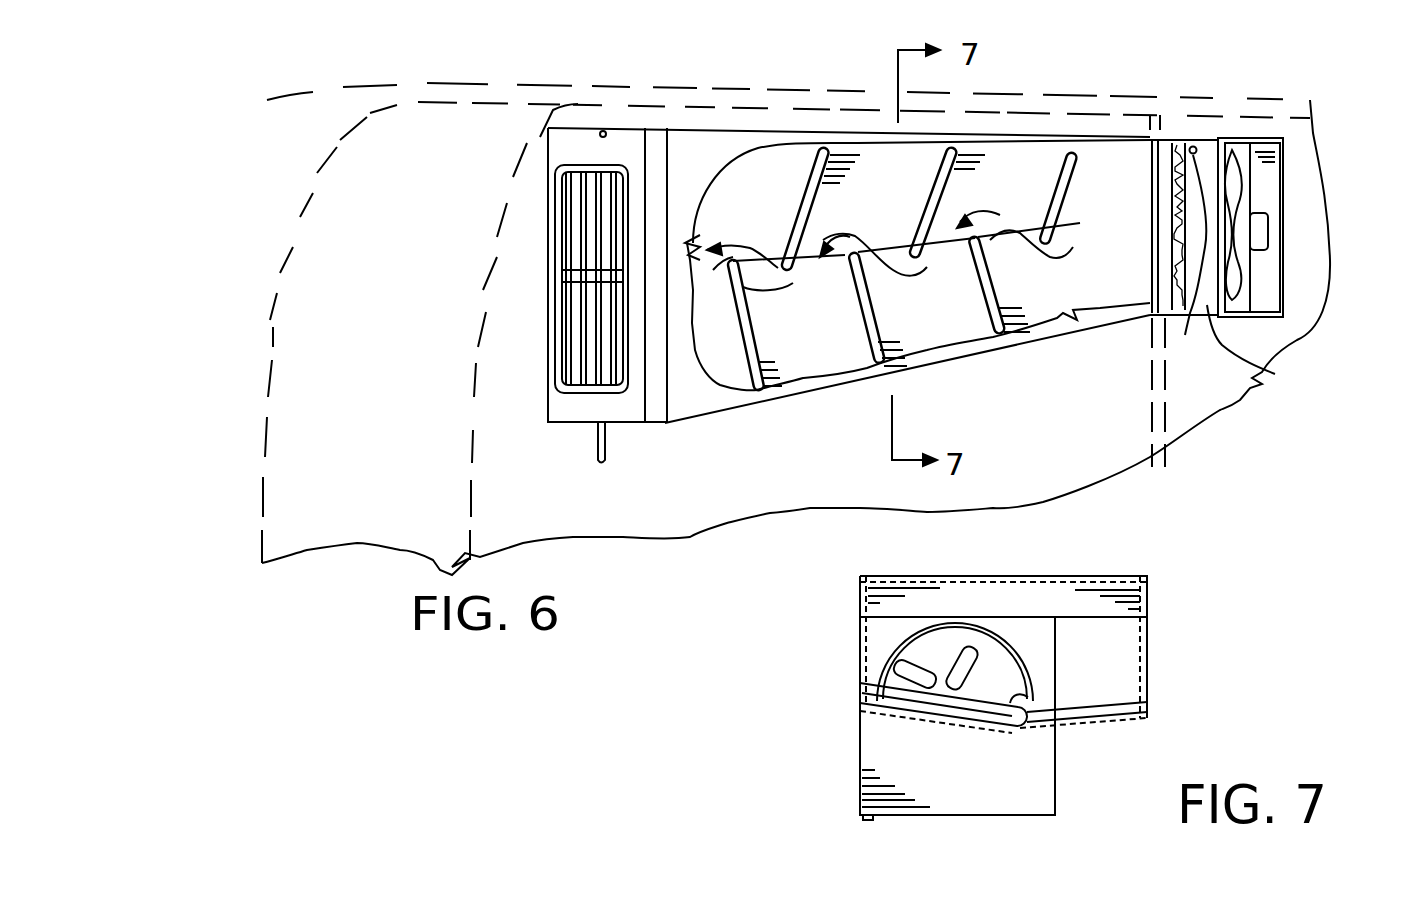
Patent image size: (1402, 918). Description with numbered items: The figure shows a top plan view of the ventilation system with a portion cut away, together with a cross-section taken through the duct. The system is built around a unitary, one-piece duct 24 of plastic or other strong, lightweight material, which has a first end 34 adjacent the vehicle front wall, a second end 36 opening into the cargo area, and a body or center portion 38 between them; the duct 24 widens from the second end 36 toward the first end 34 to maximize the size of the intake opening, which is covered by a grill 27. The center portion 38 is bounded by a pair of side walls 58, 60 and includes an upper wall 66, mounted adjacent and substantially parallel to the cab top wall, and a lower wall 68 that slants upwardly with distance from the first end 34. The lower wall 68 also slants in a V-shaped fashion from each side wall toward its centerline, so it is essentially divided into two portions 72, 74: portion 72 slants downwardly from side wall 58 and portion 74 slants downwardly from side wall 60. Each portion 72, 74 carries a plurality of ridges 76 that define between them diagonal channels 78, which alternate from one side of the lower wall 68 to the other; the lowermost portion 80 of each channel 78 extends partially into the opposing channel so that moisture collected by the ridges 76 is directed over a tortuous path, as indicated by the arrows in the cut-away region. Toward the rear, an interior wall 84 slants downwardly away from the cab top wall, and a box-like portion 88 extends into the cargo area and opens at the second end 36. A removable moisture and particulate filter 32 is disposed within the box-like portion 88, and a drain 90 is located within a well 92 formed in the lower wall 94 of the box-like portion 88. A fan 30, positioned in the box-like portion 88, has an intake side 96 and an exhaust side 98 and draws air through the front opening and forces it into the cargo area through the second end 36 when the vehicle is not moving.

In FIG. 6, the duct 24 is at (703, 420).
In FIG. 7, the duct 24 is at (1118, 567).
In FIG. 6, the grill 27 is at (573, 347).
In FIG. 6, the fan 30 is at (1233, 140).
In FIG. 6, the filter 32 is at (1175, 160).
In FIG. 6, the first end 34 is at (540, 233).
In FIG. 6, the second end 36 is at (1290, 190).
In FIG. 6, the center portion 38 is at (810, 397).
In FIG. 6, the side wall 58 is at (1025, 345).
In FIG. 7, the side wall 58 is at (1145, 653).
In FIG. 6, the side wall 60 is at (1035, 130).
In FIG. 7, the side wall 60 is at (860, 643).
In FIG. 7, the upper wall 66 is at (1020, 577).
In FIG. 7, the lower wall 68 is at (1073, 725).
In FIG. 7, the portion 72 is at (1100, 723).
In FIG. 7, the portion 74 is at (933, 717).
In FIG. 6, the ridges 76 is at (812, 140).
In FIG. 6, the channels 78 is at (860, 167).
In FIG. 6, the lowermost portion 80 is at (796, 266).
In FIG. 7, the interior wall 84 is at (1008, 783).
In FIG. 6, the box-like portion 88 is at (1200, 135).
In FIG. 6, the drain 90 is at (1193, 142).
In FIG. 7, the drain 90 is at (877, 820).
In FIG. 6, the well 92 is at (1190, 310).
In FIG. 7, the lower wall 94 is at (957, 816).
In FIG. 6, the intake side 96 is at (1275, 374).
In FIG. 6, the exhaust side 98 is at (1270, 170).